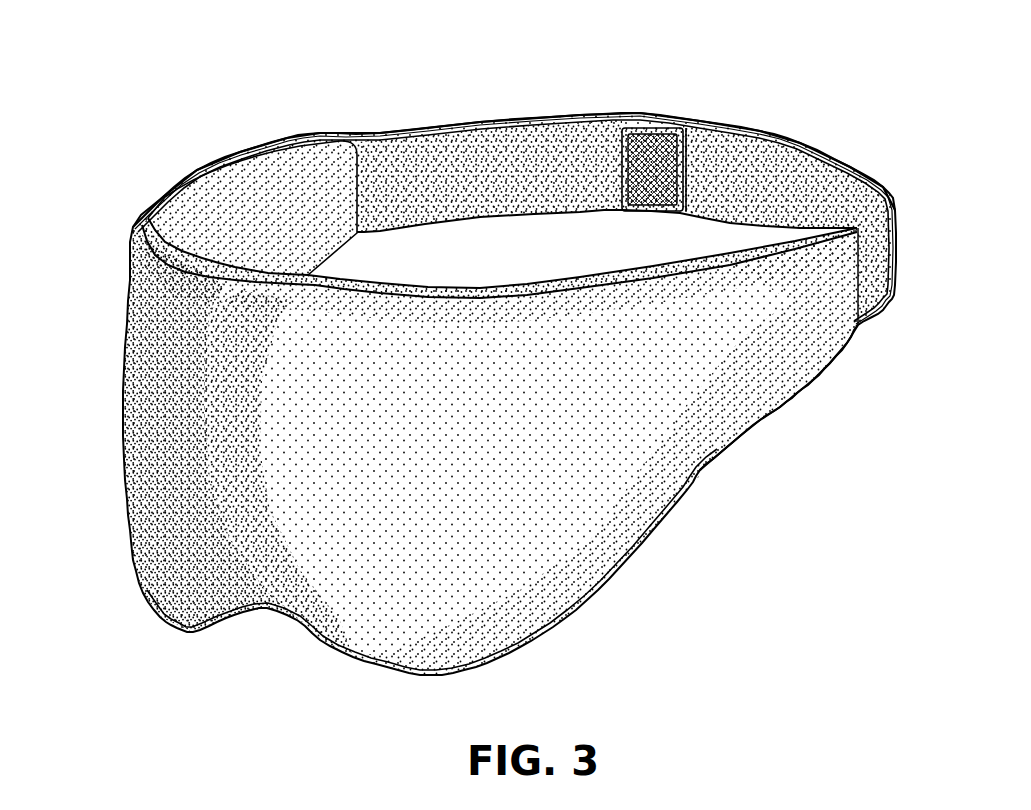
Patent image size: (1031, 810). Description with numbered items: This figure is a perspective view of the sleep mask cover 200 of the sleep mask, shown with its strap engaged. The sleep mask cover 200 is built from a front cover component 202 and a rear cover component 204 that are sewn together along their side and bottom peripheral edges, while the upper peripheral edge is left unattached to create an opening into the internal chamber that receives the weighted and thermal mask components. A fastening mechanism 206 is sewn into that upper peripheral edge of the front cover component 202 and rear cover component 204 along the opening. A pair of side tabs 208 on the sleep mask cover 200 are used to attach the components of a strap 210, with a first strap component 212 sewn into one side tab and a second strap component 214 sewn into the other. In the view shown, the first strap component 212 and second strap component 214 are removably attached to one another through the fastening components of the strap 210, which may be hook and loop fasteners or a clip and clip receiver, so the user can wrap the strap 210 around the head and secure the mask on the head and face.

The sleep mask cover 200 is at (529, 351).
The front cover component 202 is at (331, 468).
The rear cover component 204 is at (244, 242).
The fastening mechanism 206 is at (187, 200).
The side tabs 208 is at (319, 133).
The strap 210 is at (713, 125).
The first strap component 212 is at (476, 183).
The second strap component 214 is at (774, 208).